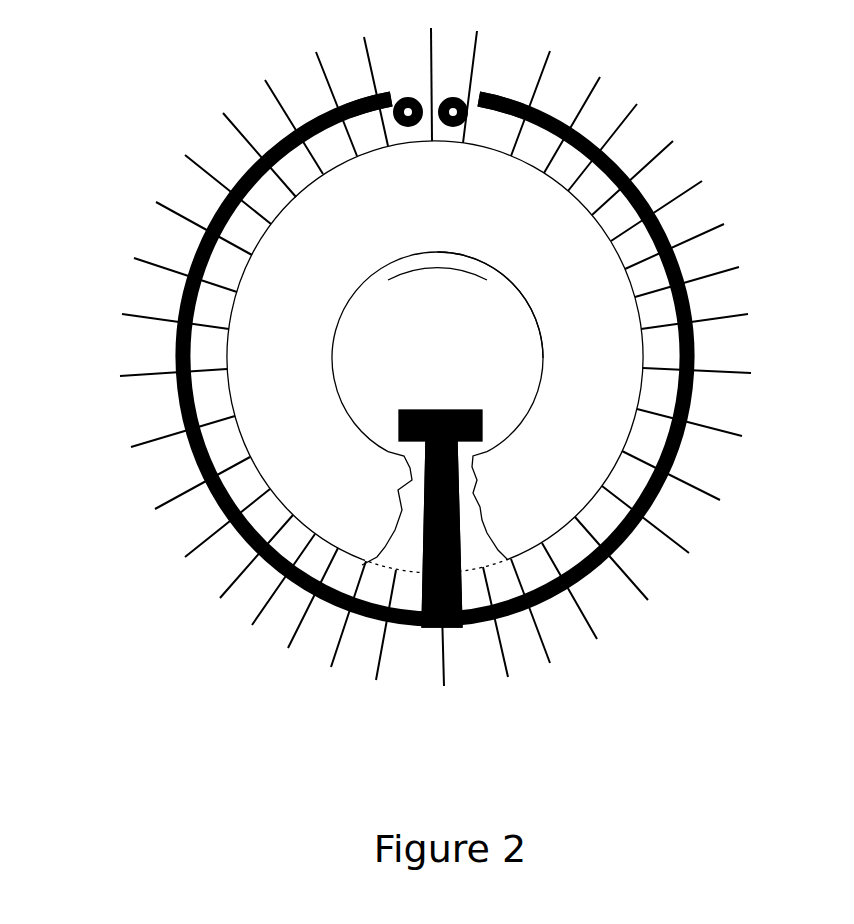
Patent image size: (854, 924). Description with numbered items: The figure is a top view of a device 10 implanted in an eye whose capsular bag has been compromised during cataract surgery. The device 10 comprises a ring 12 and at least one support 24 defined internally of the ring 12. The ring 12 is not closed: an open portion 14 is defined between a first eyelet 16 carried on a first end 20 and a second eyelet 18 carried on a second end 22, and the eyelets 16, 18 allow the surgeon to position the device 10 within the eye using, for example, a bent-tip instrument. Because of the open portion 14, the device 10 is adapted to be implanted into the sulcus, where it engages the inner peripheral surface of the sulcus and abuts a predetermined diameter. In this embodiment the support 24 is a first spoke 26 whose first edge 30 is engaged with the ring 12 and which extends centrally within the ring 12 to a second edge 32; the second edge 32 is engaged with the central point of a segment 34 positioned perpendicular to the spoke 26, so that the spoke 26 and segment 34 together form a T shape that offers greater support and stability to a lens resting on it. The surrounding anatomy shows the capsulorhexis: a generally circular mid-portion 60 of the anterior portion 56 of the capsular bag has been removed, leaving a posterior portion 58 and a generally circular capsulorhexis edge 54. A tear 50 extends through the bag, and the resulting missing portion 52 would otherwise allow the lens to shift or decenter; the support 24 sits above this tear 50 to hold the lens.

The device 10 is at (176, 119).
The ring 12 is at (190, 246).
The open portion 14 is at (428, 92).
The first eyelet 16 is at (383, 91).
The second eyelet 18 is at (481, 91).
The first end 20 is at (405, 100).
The second end 22 is at (455, 100).
The support 24 is at (461, 506).
The first spoke 26 is at (442, 534).
The first edge 30 is at (423, 628).
The second edge 32 is at (427, 445).
The segment 34 is at (392, 426).
The tear 50 is at (427, 528).
The missing portion 52 is at (396, 544).
The capsulorhexis edge 54 is at (539, 328).
The anterior portion 56 is at (313, 278).
The posterior portion 58 is at (447, 229).
The mid-portion 60 is at (437, 352).